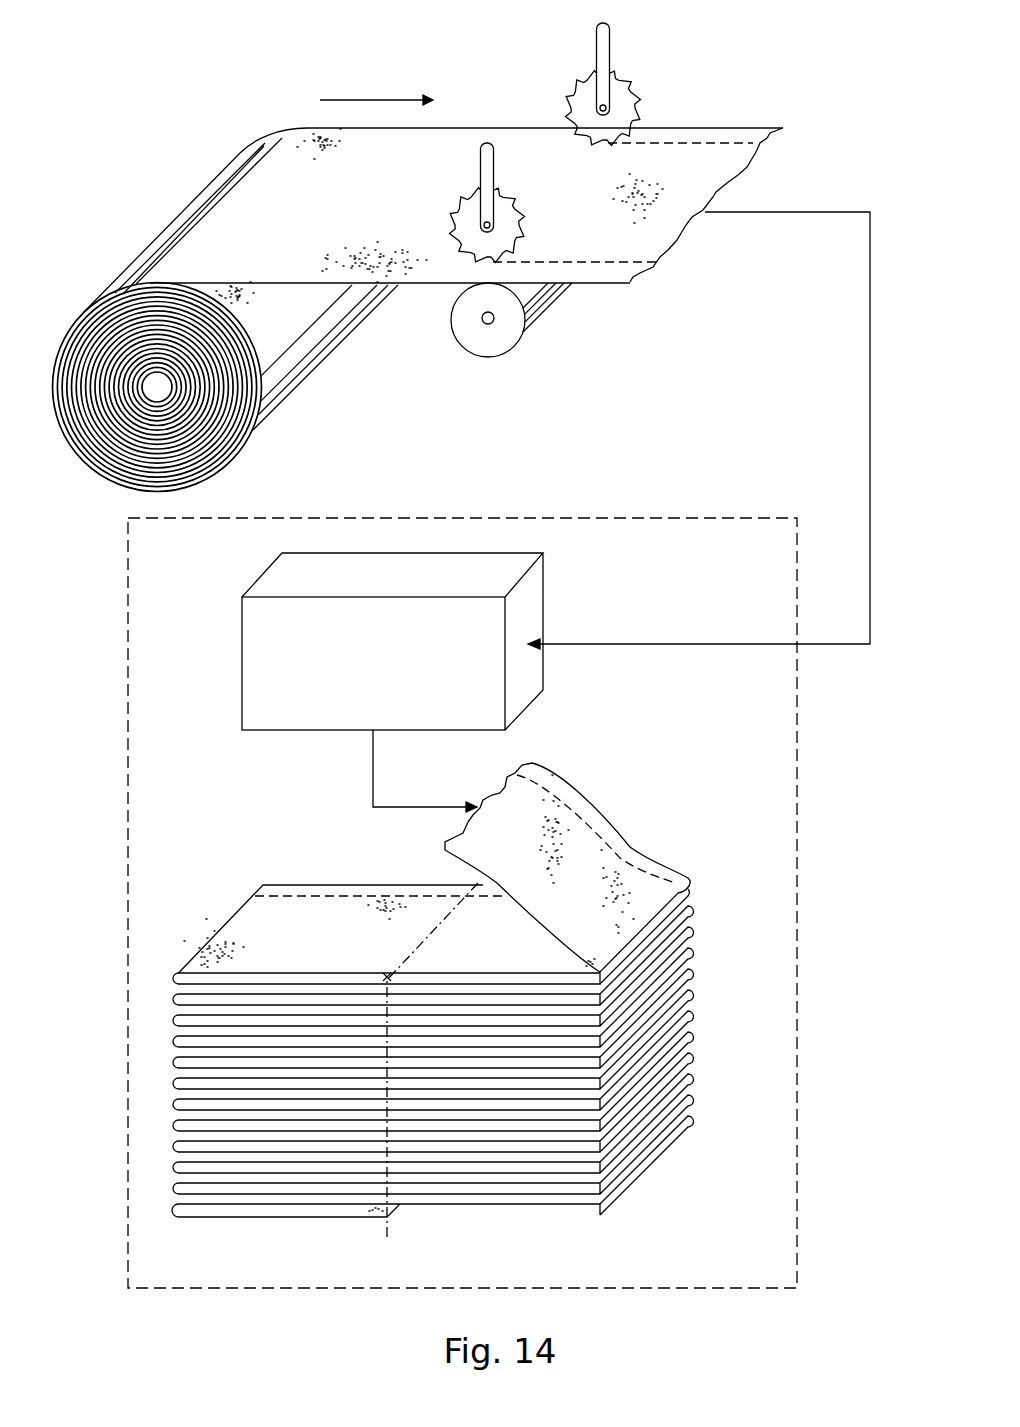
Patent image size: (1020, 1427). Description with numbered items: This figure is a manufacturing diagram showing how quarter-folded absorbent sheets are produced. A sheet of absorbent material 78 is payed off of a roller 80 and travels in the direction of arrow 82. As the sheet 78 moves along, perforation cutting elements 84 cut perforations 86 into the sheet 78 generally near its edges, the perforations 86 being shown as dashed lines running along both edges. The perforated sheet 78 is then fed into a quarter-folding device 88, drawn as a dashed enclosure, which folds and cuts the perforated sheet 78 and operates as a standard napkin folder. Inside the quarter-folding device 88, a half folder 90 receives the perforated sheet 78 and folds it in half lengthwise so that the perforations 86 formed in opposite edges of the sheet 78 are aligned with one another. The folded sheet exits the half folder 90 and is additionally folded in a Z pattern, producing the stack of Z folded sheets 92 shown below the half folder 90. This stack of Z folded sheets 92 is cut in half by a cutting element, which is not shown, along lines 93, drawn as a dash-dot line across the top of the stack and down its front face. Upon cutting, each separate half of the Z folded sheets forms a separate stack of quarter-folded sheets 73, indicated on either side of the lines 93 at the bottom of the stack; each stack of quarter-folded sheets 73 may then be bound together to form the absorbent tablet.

The stack of quarter-folded sheets 73 is at (272, 1227).
The sheet of absorbent material 78 is at (362, 204).
The roller 80 is at (83, 463).
The arrow 82 is at (367, 100).
The perforation cutting elements 84 is at (642, 91).
The perforations 86 is at (707, 143).
The quarter-folding device 88 is at (797, 828).
The half folder 90 is at (429, 677).
The Z folded sheets 92 is at (207, 927).
The lines 93 is at (433, 928).